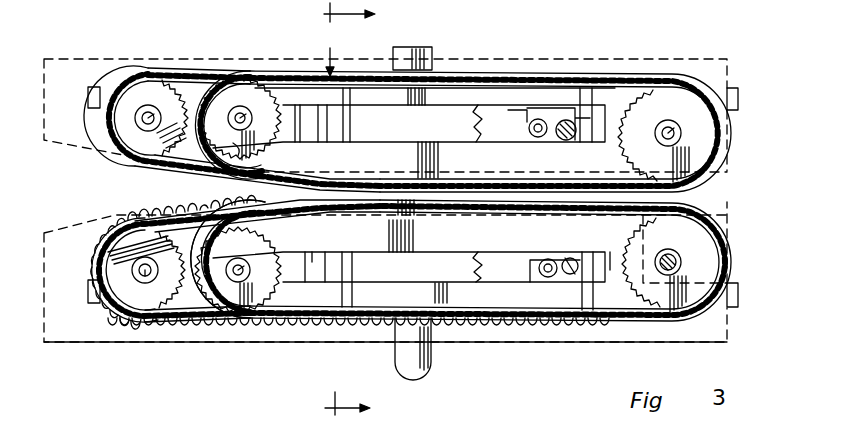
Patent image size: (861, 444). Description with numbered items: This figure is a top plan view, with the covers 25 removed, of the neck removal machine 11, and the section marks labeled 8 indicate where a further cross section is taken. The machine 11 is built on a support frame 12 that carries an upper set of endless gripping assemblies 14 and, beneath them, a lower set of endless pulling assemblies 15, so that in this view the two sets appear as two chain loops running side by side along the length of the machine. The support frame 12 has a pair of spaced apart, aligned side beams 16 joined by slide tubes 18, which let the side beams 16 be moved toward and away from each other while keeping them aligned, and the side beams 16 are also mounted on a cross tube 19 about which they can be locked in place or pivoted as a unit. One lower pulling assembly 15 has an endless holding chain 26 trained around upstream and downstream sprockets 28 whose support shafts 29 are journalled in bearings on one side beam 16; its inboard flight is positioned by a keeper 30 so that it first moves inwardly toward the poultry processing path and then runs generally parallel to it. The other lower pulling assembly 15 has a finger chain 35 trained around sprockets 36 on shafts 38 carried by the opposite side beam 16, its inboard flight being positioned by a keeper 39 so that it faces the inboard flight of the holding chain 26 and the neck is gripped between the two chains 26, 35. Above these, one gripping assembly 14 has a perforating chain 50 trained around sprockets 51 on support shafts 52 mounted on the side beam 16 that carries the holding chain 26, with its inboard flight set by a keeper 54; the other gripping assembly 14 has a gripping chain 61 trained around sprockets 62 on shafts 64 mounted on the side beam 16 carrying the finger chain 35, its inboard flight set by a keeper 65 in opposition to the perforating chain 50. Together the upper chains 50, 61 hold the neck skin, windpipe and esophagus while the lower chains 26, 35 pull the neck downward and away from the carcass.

The section line 8 is at (356, 212).
The neck removal machine 11 is at (110, 358).
The support frame 12 is at (396, 364).
The endless gripping assemblies 14 is at (729, 163).
The endless pulling assemblies 15 is at (118, 210).
The side beams 16 is at (540, 95).
The slide tubes 18 is at (312, 254).
The cross tube 19 is at (425, 52).
The covers 25 is at (43, 141).
The holding chain 26 is at (181, 73).
The sprockets 28 is at (132, 89).
The support shafts 29 is at (166, 100).
The keeper 30 is at (224, 140).
The finger chain 35 is at (212, 318).
The sprockets 36 is at (120, 273).
The shafts 38 is at (555, 242).
The keeper 39 is at (242, 261).
The perforating chain 50 is at (343, 39).
The sprockets 51 is at (240, 86).
The support shafts 52 is at (271, 100).
The keeper 54 is at (381, 150).
The gripping chain 61 is at (625, 314).
The sprockets 62 is at (238, 316).
The shafts 64 is at (236, 271).
The keeper 65 is at (366, 243).